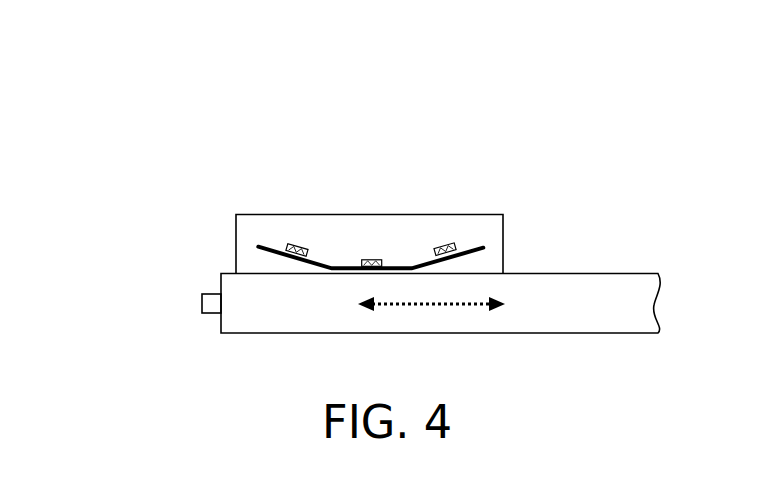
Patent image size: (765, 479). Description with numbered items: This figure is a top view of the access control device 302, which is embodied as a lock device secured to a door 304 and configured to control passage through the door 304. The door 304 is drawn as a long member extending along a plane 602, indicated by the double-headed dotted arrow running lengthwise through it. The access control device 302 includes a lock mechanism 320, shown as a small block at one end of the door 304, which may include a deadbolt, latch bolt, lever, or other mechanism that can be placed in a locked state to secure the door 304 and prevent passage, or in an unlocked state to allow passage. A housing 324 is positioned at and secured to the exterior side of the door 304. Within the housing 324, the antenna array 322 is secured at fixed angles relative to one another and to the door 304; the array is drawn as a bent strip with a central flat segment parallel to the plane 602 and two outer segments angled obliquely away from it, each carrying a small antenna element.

The access control device 302 is at (79, 91).
The door 304 is at (575, 274).
The lock mechanism 320 is at (202, 296).
The antenna array 322 is at (409, 247).
The housing 324 is at (235, 247).
The plane 602 is at (460, 305).